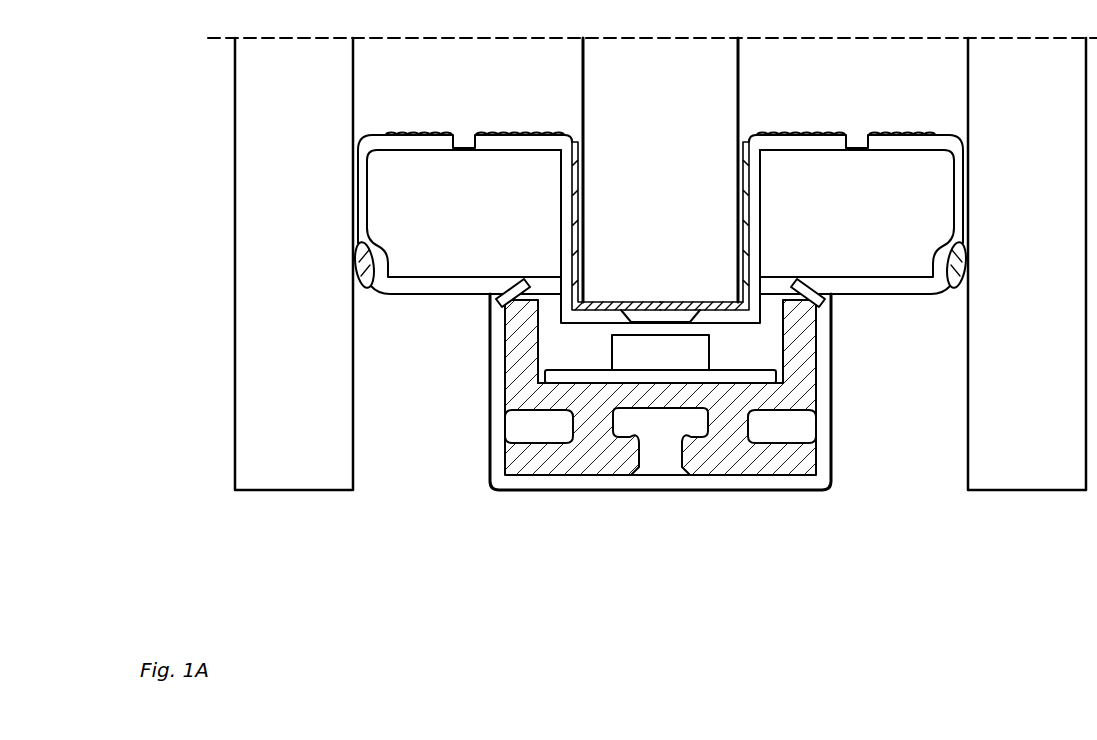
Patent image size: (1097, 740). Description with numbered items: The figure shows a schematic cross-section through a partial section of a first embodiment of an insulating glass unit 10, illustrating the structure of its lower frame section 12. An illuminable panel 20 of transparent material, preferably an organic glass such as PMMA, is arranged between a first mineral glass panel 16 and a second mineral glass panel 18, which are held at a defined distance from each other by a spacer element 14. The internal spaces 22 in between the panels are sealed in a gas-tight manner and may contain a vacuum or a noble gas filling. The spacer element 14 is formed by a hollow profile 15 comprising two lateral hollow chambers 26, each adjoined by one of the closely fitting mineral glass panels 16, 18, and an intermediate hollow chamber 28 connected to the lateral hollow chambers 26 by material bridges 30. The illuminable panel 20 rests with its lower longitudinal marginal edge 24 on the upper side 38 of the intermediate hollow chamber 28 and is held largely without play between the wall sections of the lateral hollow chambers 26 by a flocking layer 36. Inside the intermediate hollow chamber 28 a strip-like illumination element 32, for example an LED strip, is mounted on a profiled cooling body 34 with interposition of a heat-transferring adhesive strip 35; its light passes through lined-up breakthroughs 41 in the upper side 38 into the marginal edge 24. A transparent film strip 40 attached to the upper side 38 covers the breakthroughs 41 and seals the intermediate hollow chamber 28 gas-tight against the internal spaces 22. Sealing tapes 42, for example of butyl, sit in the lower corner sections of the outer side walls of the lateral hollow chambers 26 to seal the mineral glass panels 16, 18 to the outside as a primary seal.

The insulating glass unit 10 is at (660, 360).
The lower frame section 12 is at (660, 360).
The spacer element 14 is at (849, 488).
The hollow profile 15 is at (579, 479).
The first mineral glass panel 16 is at (279, 90).
The second mineral glass panel 18 is at (1007, 90).
The illuminable panel 20 is at (641, 90).
The internal spaces in between panels 22 is at (440, 90).
The lower longitudinal marginal edge 24 is at (603, 288).
The lateral hollow chambers 26 is at (440, 201).
The intermediate hollow chamber 28 is at (518, 418).
The material bridges 30 is at (537, 288).
The illumination element 32 is at (647, 366).
The profiled cooling body 34 is at (748, 477).
The heat-transferring adhesive strip 35 is at (562, 380).
The flocking layer 36 is at (580, 205).
The upper side 38 is at (722, 320).
The transparent film strip 40 is at (680, 304).
The breakthroughs 41 is at (647, 320).
The sealing tapes 42 is at (368, 282).